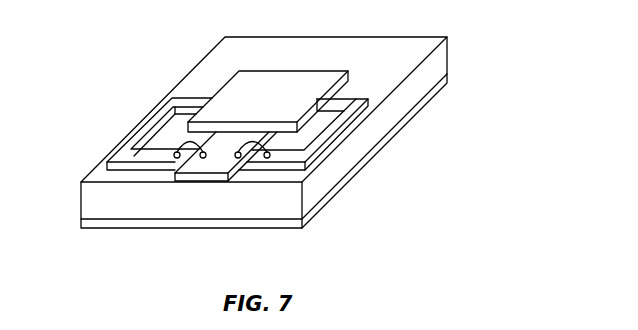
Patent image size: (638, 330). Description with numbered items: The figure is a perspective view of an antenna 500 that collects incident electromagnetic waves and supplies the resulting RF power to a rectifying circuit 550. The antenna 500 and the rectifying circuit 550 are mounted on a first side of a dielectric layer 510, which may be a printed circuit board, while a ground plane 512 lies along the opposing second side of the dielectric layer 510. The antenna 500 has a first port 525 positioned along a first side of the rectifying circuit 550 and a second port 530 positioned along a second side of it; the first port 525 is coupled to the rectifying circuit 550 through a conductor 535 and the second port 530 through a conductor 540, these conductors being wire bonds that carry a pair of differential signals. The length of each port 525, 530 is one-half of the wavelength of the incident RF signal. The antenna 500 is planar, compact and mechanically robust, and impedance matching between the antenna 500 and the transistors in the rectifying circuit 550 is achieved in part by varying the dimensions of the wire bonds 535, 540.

The antenna 500 is at (220, 85).
The dielectric layer 510 is at (447, 56).
The ground plane 512 is at (97, 227).
The first port 525 is at (148, 127).
The second port 530 is at (343, 125).
The conductor 535 is at (186, 147).
The conductor 540 is at (261, 142).
The rectifying circuit 550 is at (201, 184).